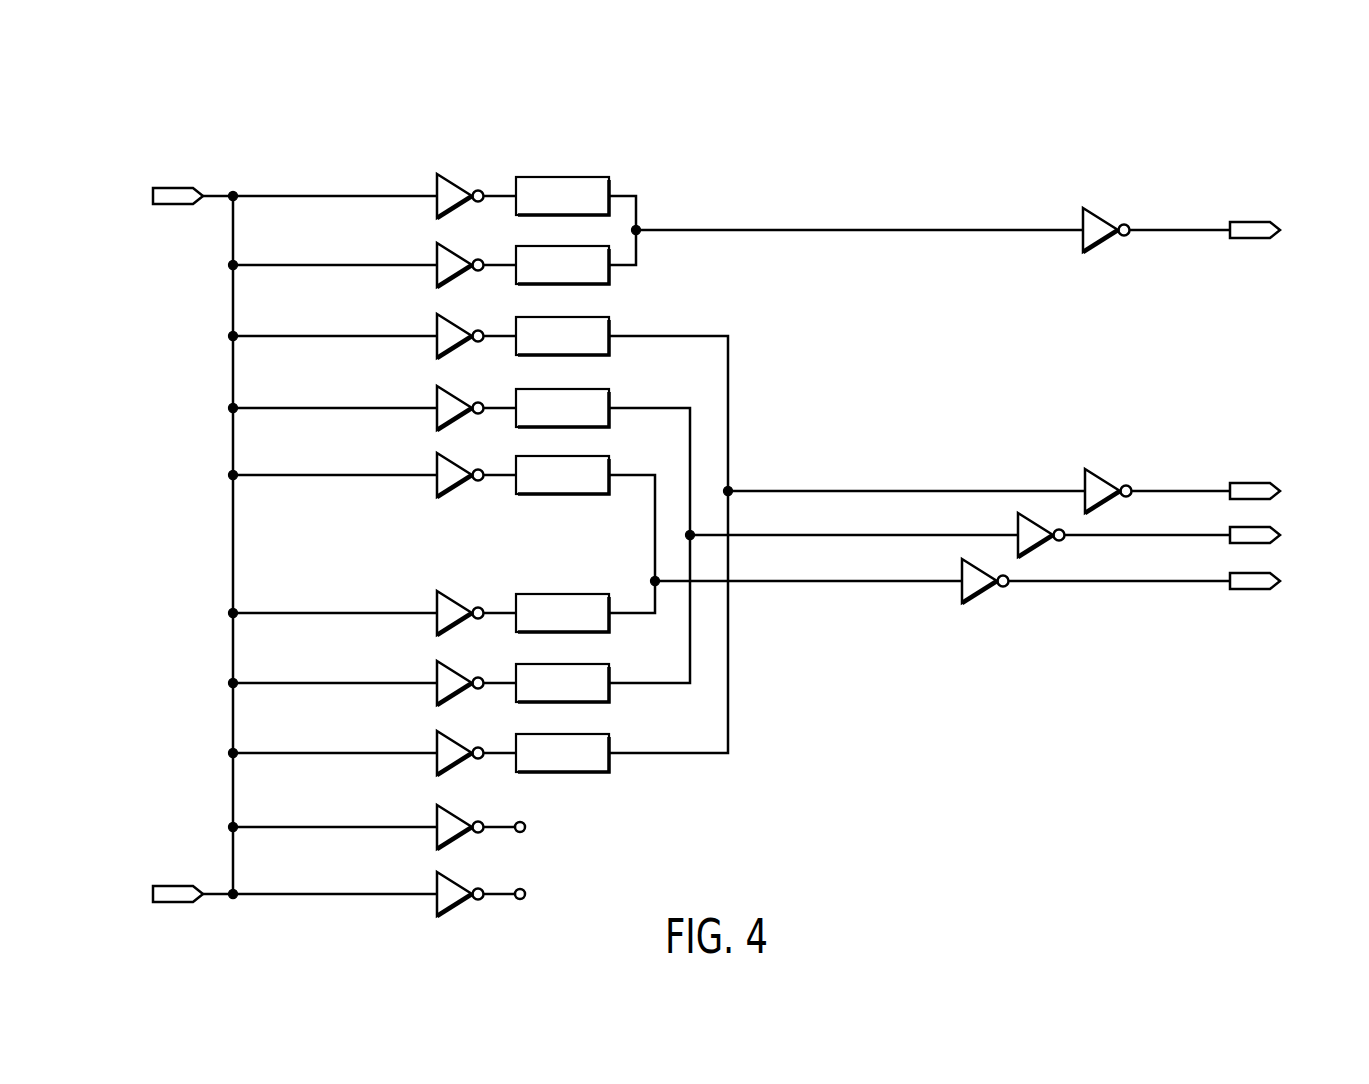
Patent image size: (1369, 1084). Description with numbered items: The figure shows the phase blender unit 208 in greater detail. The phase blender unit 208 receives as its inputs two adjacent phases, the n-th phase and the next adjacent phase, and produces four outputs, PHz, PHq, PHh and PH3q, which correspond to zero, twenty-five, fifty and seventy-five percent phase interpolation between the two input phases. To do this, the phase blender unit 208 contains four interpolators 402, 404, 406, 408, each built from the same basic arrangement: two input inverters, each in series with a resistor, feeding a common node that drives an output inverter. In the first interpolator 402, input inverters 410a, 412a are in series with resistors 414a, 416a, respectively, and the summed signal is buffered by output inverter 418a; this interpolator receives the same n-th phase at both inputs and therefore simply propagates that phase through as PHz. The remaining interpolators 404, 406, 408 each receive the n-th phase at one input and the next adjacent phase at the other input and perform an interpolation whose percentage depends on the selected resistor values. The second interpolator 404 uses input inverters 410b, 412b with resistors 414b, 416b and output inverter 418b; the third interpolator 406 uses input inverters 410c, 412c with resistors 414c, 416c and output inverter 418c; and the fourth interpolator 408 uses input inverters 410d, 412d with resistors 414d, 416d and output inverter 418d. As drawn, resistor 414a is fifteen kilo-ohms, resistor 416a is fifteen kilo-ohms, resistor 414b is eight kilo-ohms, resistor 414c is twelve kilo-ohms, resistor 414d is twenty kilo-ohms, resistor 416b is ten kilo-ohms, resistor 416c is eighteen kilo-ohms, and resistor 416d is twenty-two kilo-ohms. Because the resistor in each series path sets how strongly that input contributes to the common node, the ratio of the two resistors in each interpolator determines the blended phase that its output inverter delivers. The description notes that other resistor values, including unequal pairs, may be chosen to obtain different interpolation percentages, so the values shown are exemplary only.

The phase blender unit 208 is at (852, 112).
The interpolator 402 is at (637, 187).
The interpolator 404 is at (728, 380).
The interpolator 406 is at (612, 412).
The interpolator 408 is at (633, 477).
The input inverter 410a is at (458, 184).
The input inverter 410b is at (460, 326).
The input inverter 410c is at (462, 398).
The input inverter 410d is at (465, 466).
The input inverter 412a is at (465, 257).
The input inverter 412b is at (457, 602).
The input inverter 412c is at (460, 673).
The input inverter 412d is at (462, 745).
The resistor 414a is at (543, 177).
The resistor 414b is at (610, 320).
The resistor 414c is at (610, 390).
The resistor 414d is at (608, 463).
The resistor 416a is at (609, 278).
The resistor 416b is at (563, 594).
The resistor 416c is at (610, 676).
The resistor 416d is at (610, 743).
The output inverter 418a is at (1108, 240).
The output inverter 418b is at (1105, 500).
The output inverter 418c is at (1045, 545).
The output inverter 418d is at (990, 590).